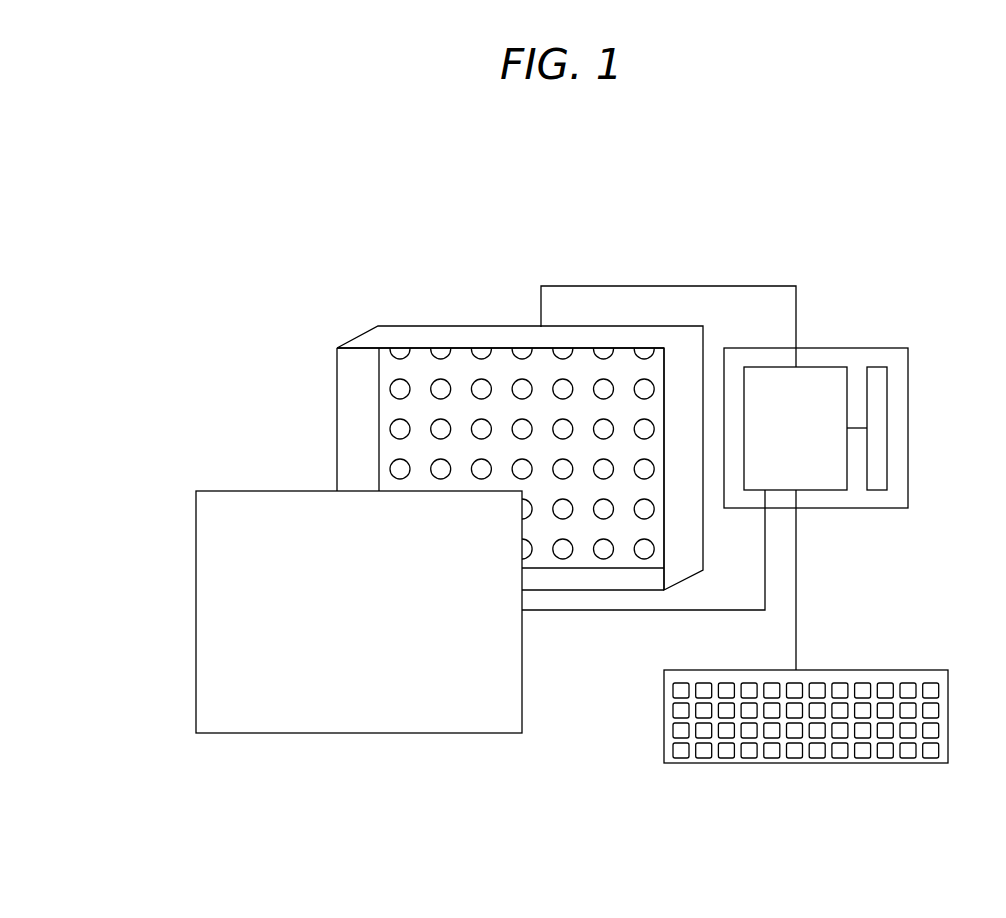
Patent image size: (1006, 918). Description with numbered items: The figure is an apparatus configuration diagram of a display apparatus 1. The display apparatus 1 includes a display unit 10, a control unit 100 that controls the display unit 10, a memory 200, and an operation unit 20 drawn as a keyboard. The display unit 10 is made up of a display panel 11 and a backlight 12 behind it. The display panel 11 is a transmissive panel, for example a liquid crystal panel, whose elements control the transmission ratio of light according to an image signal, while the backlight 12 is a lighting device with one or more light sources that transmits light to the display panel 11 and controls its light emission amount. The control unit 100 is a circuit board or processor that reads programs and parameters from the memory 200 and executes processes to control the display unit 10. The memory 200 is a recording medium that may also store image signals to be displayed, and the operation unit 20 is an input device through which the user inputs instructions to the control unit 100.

The display apparatus 1 is at (254, 147).
The display unit 10 is at (498, 235).
The display panel 11 is at (268, 491).
The backlight 12 is at (465, 327).
The control unit 100 is at (825, 367).
The memory 200 is at (886, 485).
The input device (keyboard) 20 is at (807, 763).